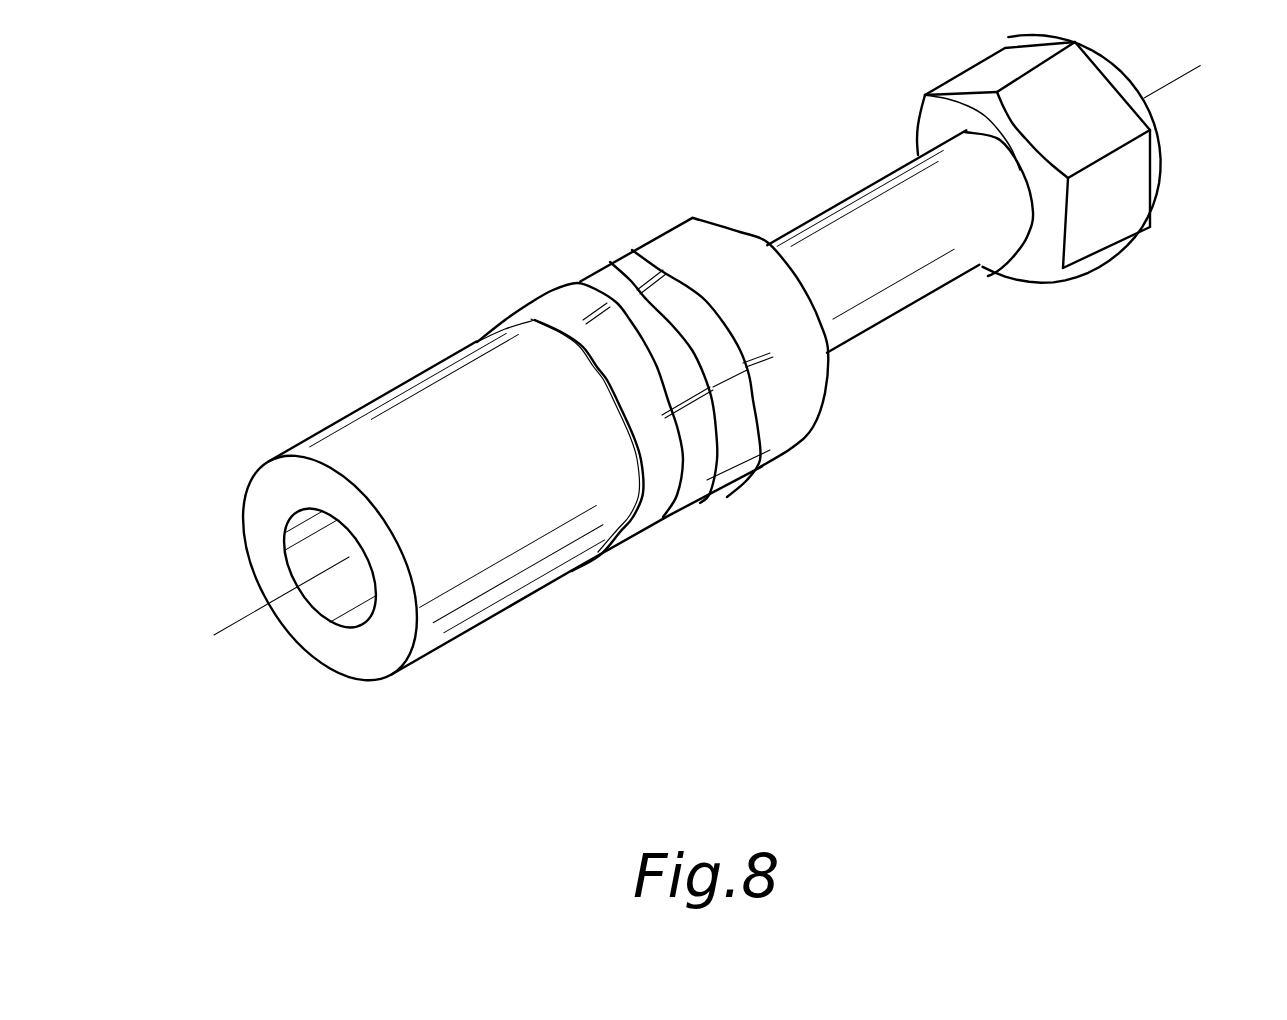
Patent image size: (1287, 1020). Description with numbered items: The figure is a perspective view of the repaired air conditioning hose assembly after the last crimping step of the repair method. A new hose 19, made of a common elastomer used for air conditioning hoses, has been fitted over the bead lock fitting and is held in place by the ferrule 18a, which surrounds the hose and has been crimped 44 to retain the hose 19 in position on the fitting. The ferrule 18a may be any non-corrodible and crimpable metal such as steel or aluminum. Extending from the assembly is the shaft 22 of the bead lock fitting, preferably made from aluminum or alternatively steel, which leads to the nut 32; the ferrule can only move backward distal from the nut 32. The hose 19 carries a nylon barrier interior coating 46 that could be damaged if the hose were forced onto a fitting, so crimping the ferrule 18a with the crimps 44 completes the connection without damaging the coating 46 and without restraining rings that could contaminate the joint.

The hose 19 is at (523, 600).
The nylon barrier interior coating 46 is at (279, 614).
The ferrule 18a is at (778, 427).
The crimp 44 is at (617, 270).
The shaft 22 is at (893, 317).
The nut 32 is at (1117, 212).